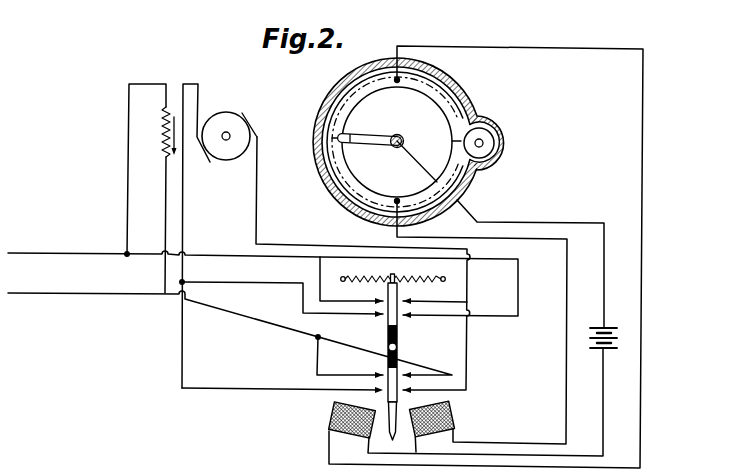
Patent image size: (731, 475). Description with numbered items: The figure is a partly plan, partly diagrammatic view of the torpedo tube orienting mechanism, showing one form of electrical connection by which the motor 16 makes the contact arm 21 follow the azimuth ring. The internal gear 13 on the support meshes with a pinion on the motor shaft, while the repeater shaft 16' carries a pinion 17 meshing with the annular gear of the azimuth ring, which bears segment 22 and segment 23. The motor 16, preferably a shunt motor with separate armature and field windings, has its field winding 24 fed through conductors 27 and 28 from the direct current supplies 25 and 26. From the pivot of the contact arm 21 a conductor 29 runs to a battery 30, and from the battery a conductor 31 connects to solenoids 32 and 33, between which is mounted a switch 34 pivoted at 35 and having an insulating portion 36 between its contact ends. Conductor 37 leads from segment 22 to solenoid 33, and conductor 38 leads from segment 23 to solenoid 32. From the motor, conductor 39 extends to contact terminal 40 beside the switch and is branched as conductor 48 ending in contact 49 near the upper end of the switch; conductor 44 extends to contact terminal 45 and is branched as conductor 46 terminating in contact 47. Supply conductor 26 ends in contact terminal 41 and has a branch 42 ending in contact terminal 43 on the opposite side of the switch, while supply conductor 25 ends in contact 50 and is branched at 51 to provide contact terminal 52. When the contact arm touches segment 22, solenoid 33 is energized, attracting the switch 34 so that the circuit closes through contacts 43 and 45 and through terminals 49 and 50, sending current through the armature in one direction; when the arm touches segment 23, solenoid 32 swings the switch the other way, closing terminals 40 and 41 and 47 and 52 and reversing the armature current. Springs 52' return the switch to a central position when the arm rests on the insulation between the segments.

The internal gear 13 is at (456, 107).
The motor 16 is at (229, 121).
The shaft 16' is at (515, 152).
The pinion 17 is at (493, 137).
The contact arm 21 is at (367, 137).
The segment 22 is at (443, 103).
The segment 23 is at (470, 188).
The field winding 24 is at (161, 152).
The direct current supply 25 is at (66, 254).
The direct current supply 26 is at (62, 293).
The conductor 27 is at (129, 127).
The conductor 28 is at (166, 216).
The conductor 29 is at (545, 224).
The battery 30 is at (601, 327).
The conductor 31 is at (497, 455).
The solenoid 32 is at (450, 420).
The solenoid 33 is at (336, 414).
The switch 34 is at (394, 433).
The pivot 35 is at (400, 347).
The insulating portion 36 is at (388, 333).
The conductor 37 is at (527, 48).
The conductor 38 is at (566, 393).
The conductor 39 is at (289, 244).
The contact terminal 40 is at (409, 392).
The contact terminal 41 is at (410, 374).
The branch 42 is at (317, 355).
The contact terminal 43 is at (377, 376).
The conductor 44 is at (186, 218).
The contact terminal 45 is at (378, 392).
The conductor 46 is at (232, 283).
The conductor 47 is at (381, 316).
The conductor 48 is at (479, 287).
The contact 49 is at (405, 300).
The contact 50 is at (407, 316).
The branch 51 is at (320, 272).
The contact terminal 52 is at (362, 293).
The springs 52' is at (393, 269).